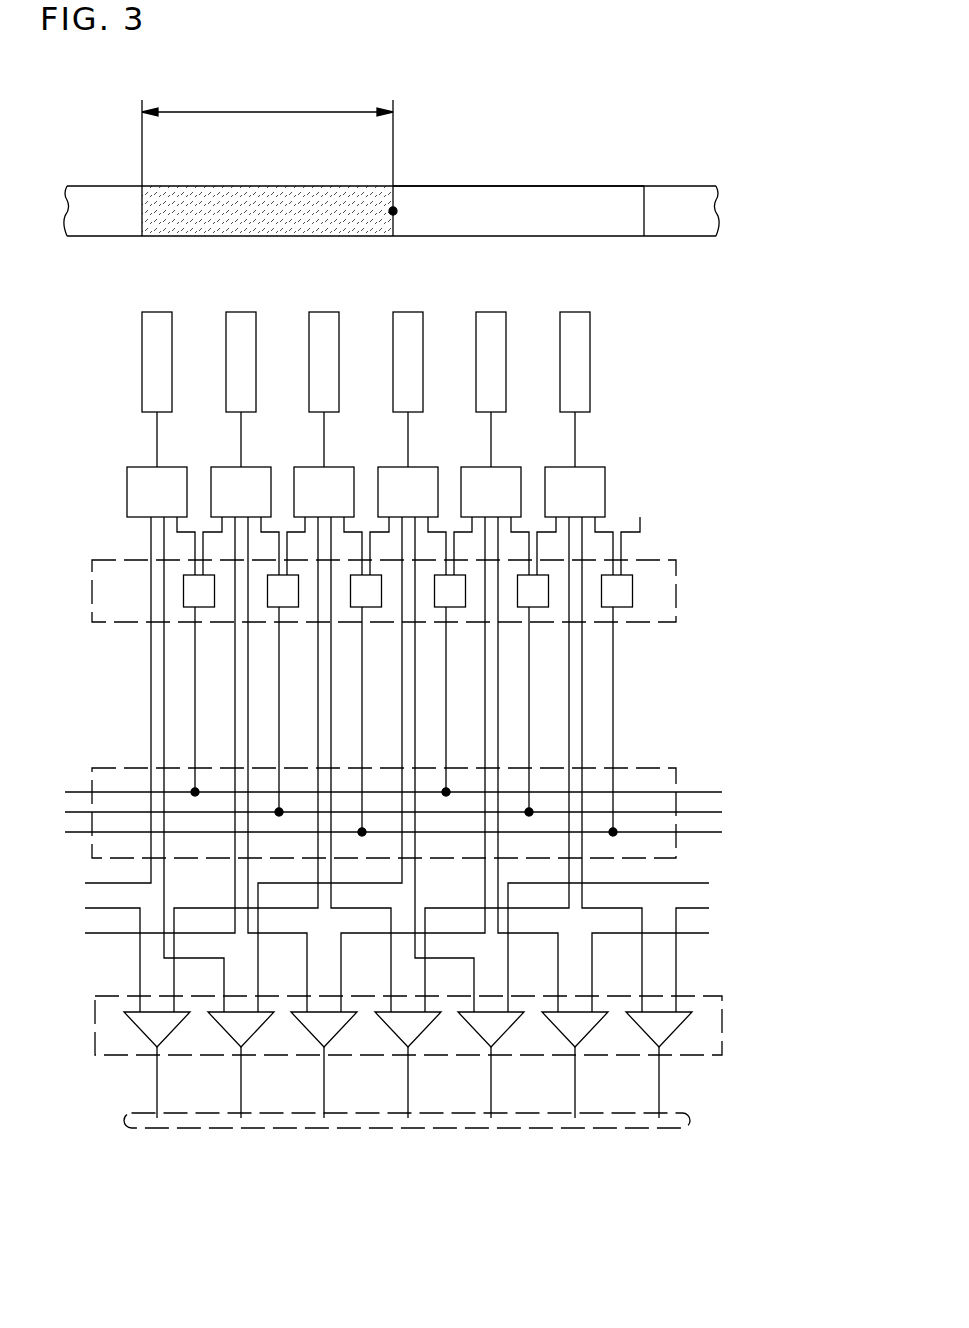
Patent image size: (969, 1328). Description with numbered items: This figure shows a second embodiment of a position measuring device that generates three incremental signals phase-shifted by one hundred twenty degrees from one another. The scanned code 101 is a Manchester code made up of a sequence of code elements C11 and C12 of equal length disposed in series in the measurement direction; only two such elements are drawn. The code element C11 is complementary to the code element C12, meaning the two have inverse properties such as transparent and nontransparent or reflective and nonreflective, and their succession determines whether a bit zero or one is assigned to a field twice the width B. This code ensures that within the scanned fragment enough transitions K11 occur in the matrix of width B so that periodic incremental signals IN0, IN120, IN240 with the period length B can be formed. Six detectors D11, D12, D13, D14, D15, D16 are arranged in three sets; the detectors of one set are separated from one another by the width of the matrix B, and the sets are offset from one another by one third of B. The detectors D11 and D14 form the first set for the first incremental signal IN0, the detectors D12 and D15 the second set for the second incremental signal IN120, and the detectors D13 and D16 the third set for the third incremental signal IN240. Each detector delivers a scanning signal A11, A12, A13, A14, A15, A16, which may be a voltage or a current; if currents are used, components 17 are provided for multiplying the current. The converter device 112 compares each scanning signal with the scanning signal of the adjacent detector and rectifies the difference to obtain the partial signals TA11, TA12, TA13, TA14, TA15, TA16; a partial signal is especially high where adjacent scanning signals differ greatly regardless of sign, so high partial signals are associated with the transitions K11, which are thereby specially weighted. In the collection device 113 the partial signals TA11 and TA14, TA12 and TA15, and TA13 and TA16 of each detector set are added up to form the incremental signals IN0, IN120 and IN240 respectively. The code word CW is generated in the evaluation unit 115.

The code 101 is at (735, 205).
The matrix width B is at (267, 160).
The code element C11 is at (307, 203).
The code element C12 is at (555, 208).
The transition K11 is at (393, 211).
The detector D11 is at (157, 322).
The detector D12 is at (241, 322).
The detector D13 is at (324, 322).
The detector D14 is at (408, 322).
The detector D15 is at (491, 322).
The detector D16 is at (575, 322).
The scanning signal A11 is at (157, 443).
The scanning signal A12 is at (241, 443).
The scanning signal A13 is at (324, 443).
The scanning signal A14 is at (408, 443).
The scanning signal A15 is at (491, 443).
The scanning signal A16 is at (575, 443).
The component 17 is at (366, 492).
The converter device 112 is at (95, 592).
The partial signal TA11 is at (195, 645).
The partial signal TA12 is at (279, 677).
The partial signal TA13 is at (362, 722).
The partial signal TA14 is at (446, 637).
The partial signal TA15 is at (529, 671).
The partial signal TA16 is at (613, 714).
The collection device 113 is at (92, 846).
The first incremental signal IN0 is at (709, 793).
The second incremental signal IN120 is at (709, 813).
The third incremental signal IN240 is at (705, 833).
The evaluation unit 115 is at (95, 1028).
The code word CW is at (690, 1122).